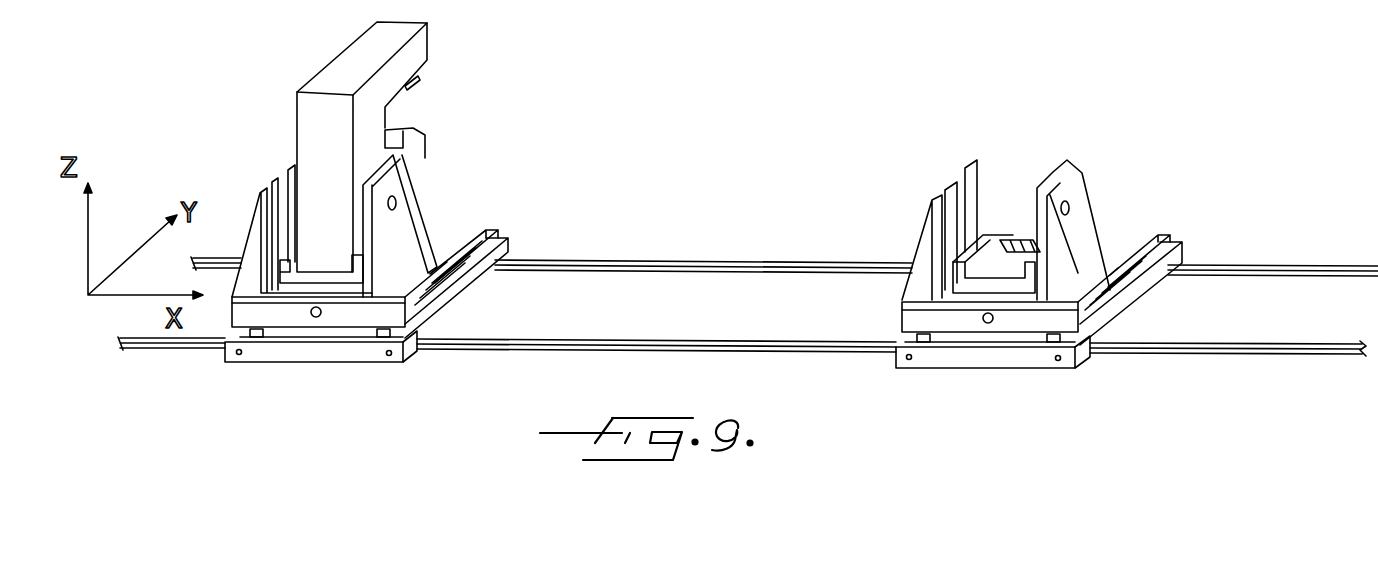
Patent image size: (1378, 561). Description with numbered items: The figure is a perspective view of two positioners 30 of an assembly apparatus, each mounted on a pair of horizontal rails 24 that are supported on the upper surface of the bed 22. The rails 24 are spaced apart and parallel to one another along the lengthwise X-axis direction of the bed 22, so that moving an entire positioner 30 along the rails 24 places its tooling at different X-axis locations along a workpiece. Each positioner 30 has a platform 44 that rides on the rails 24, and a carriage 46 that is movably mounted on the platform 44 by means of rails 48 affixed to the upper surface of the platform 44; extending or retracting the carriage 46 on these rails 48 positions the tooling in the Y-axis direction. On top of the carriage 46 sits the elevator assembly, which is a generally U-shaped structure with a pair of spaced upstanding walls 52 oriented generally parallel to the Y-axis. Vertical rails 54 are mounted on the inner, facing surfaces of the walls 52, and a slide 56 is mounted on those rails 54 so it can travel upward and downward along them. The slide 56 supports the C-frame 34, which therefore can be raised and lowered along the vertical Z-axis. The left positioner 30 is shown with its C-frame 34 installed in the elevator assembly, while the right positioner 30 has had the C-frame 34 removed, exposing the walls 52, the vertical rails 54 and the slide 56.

The bed 22 is at (748, 286).
The horizontal rails 24 is at (640, 262).
The positioner 30 is at (323, 358).
The C-frame 34 is at (330, 74).
The platform 44 is at (508, 245).
The carriage 46 is at (442, 287).
The rails 48 is at (468, 240).
The upstanding walls 52 is at (400, 168).
The vertical rails 54 is at (965, 168).
The slide 56 is at (1002, 265).